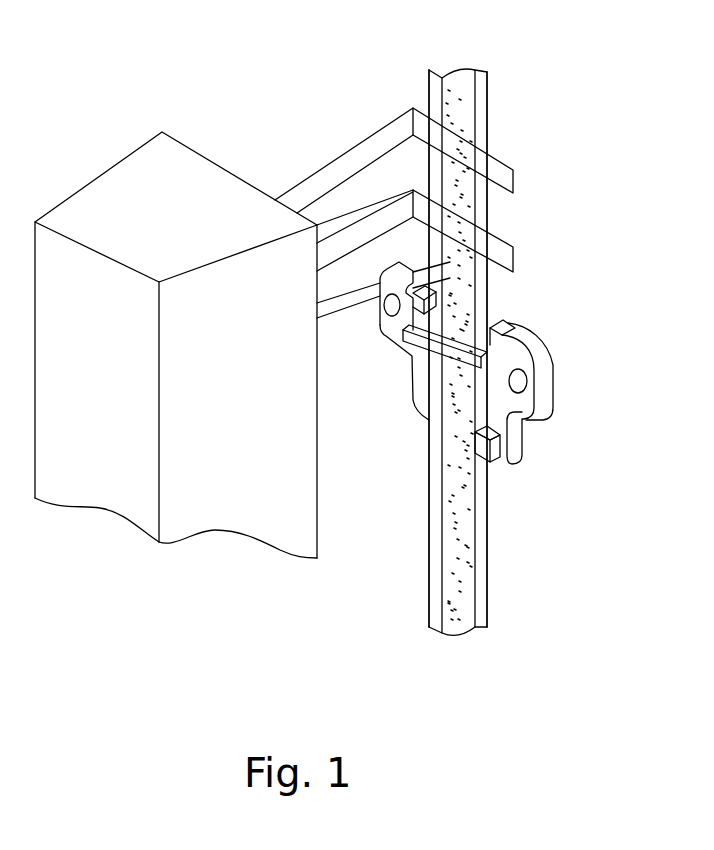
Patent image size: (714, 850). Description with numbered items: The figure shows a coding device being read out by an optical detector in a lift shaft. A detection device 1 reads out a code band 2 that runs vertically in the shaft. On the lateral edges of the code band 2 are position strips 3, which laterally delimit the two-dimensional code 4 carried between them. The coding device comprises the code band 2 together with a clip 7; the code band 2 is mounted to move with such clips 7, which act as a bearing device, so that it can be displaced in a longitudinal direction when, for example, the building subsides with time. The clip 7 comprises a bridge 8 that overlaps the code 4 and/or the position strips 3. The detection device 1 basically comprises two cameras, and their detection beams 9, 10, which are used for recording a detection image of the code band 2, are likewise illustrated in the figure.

The detection device 1 is at (213, 522).
The code band 2 is at (493, 604).
The position strips 3 is at (482, 577).
The 2D code 4 is at (457, 618).
The clip 7 is at (499, 348).
The bridge 8 is at (442, 362).
The detection beam 9 is at (364, 180).
The detection beam 10 is at (345, 288).